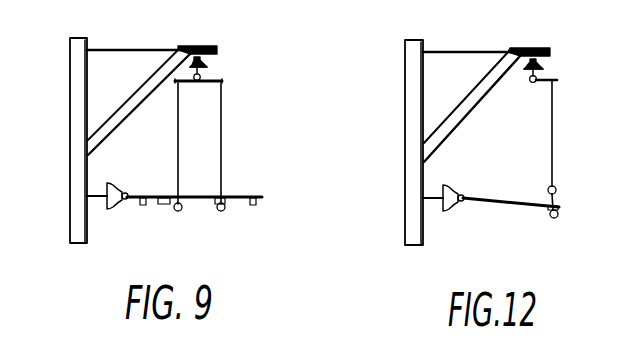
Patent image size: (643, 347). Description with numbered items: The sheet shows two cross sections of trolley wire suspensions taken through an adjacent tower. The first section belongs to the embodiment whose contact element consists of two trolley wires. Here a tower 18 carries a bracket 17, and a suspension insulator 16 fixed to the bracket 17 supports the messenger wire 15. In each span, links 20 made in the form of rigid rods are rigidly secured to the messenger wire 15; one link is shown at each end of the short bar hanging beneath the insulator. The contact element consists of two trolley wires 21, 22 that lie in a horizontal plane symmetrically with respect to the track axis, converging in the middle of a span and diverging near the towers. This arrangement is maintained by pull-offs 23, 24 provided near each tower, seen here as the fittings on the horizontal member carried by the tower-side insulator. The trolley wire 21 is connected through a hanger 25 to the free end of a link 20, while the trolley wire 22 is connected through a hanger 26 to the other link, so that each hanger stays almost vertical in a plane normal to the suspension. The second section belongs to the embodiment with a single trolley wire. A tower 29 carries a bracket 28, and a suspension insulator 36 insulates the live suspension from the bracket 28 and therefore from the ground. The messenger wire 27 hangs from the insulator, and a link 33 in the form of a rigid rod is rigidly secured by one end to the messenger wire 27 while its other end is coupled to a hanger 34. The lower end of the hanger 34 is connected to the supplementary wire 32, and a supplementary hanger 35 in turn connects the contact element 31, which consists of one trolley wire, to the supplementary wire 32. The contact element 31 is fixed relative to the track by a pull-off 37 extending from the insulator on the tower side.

In FIG. 9, the tower 18 is at (80, 67).
In FIG. 9, the bracket 17 is at (130, 101).
In FIG. 9, the suspension insulator 16 is at (205, 62).
In FIG. 9, the messenger wire 15 is at (201, 74).
In FIG. 9, the link 20 is at (173, 89).
In FIG. 9, the hanger 26 is at (177, 138).
In FIG. 9, the hanger 25 is at (223, 170).
In FIG. 9, the pull-off 24 is at (157, 209).
In FIG. 9, the pull-off 23 is at (239, 210).
In FIG. 9, the trolley wire 22 is at (177, 213).
In FIG. 9, the trolley wire 21 is at (222, 217).
In FIG. 12, the tower 29 is at (415, 100).
In FIG. 12, the bracket 28 is at (531, 48).
In FIG. 12, the suspension insulator 36 is at (542, 65).
In FIG. 12, the messenger wire 27 is at (530, 81).
In FIG. 12, the link 33 is at (553, 78).
In FIG. 12, the hanger 34 is at (553, 147).
In FIG. 12, the supplementary wire 32 is at (556, 187).
In FIG. 12, the supplementary hanger 35 is at (557, 204).
In FIG. 12, the contact element 31 is at (552, 219).
In FIG. 12, the pull-off 37 is at (503, 210).